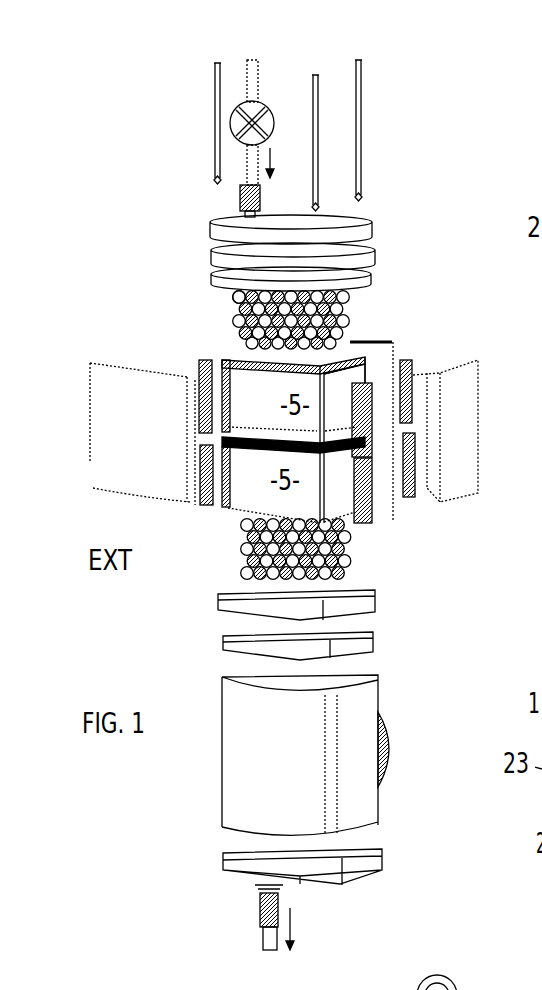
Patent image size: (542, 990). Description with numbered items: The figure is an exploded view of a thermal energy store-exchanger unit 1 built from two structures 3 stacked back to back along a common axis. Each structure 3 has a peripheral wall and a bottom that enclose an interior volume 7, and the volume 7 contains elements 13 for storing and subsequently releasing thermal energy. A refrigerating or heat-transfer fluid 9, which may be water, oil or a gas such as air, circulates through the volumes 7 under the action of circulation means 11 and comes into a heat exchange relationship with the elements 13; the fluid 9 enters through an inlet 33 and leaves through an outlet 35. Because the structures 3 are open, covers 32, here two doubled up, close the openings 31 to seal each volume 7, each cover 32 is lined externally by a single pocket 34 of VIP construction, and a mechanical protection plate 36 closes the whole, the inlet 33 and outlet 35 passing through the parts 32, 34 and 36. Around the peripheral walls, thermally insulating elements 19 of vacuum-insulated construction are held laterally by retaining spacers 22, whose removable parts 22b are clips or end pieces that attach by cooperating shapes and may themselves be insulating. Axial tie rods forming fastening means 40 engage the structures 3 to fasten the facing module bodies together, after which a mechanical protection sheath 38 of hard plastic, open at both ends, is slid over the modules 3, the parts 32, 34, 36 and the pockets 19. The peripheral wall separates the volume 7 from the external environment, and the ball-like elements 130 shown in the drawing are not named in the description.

The thermal energy store-exchanger unit 1 is at (100, 270).
The structure 3 is at (249, 377).
The interior volume 7 is at (367, 365).
The refrigerating or heat-transfer fluid 9 is at (280, 172).
The circulation means 11 is at (272, 117).
The elements for storing and releasing thermal energy 13 is at (236, 570).
The thermally insulating element of VIP construction 19 is at (114, 377).
The retaining spacer 22 is at (427, 988).
The removable part of retaining spacer 22b is at (210, 362).
The opening 31 is at (263, 350).
The cover 32 is at (240, 277).
The inlet 33 is at (240, 196).
The pocket of VIP construction 34 is at (380, 243).
The outlet 35 is at (260, 912).
The mechanical protection plate 36 is at (380, 220).
The mechanical protection sheath 38 is at (227, 764).
The fastening means 40 is at (215, 85).
The upper ball layer 130 is at (247, 297).